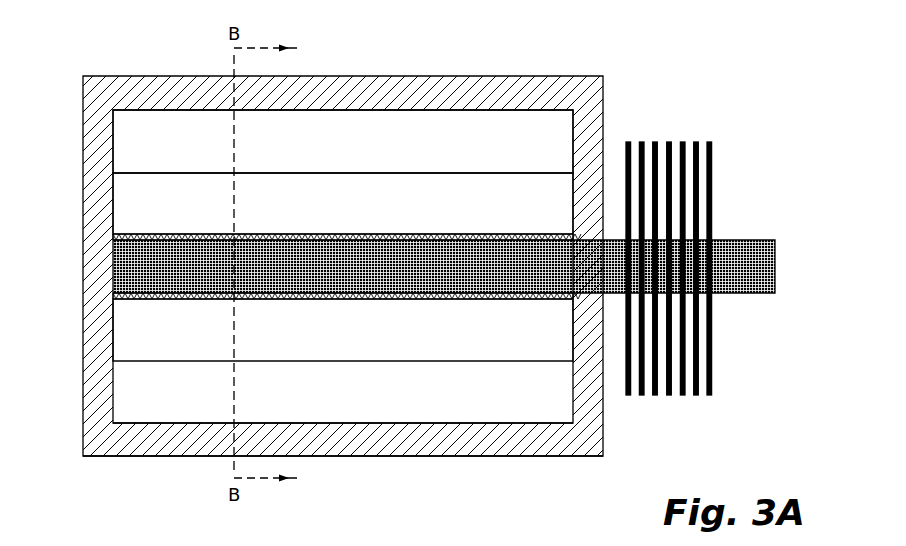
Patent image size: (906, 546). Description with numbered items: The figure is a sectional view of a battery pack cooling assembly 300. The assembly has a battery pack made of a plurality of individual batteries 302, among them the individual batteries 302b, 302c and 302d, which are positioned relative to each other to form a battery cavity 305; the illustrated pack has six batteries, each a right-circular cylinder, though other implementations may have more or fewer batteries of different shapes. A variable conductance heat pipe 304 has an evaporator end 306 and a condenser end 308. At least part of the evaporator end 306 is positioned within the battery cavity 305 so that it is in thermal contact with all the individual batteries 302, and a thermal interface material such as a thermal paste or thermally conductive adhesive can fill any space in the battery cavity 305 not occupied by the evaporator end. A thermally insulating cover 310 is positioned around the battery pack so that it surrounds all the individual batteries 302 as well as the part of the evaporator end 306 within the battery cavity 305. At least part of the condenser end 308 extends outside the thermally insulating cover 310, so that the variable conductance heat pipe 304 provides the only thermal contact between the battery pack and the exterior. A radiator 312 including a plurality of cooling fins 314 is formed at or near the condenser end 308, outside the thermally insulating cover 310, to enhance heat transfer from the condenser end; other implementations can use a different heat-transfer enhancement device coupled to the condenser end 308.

The battery pack cooling assembly 300 is at (638, 78).
The individual batteries 302 is at (181, 426).
The individual battery 302b is at (186, 149).
The individual battery 302c is at (185, 212).
The individual battery 302d is at (186, 337).
The variable conductance heat pipe 304 is at (459, 272).
The battery cavity 305 is at (448, 233).
The evaporator end 306 is at (118, 296).
The condenser end 308 is at (720, 250).
The thermally insulating cover 310 is at (472, 457).
The radiator 312 is at (710, 250).
The cooling fins 314 is at (713, 160).